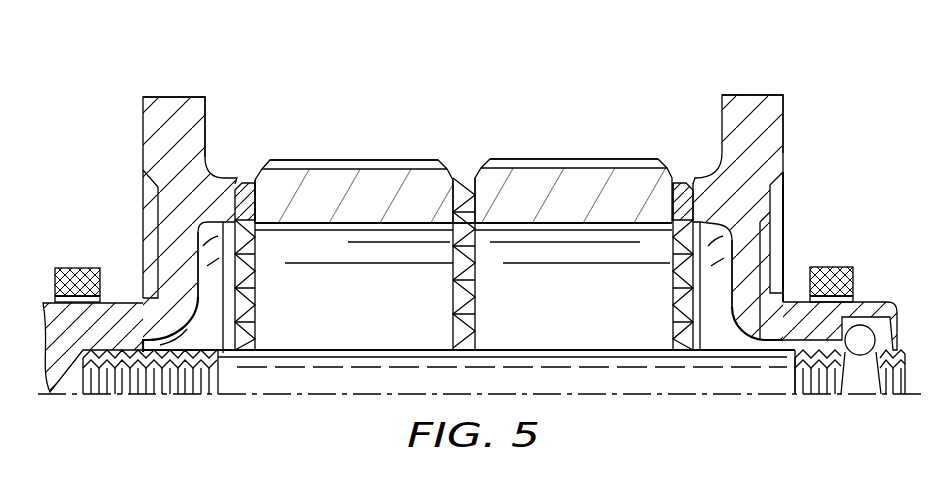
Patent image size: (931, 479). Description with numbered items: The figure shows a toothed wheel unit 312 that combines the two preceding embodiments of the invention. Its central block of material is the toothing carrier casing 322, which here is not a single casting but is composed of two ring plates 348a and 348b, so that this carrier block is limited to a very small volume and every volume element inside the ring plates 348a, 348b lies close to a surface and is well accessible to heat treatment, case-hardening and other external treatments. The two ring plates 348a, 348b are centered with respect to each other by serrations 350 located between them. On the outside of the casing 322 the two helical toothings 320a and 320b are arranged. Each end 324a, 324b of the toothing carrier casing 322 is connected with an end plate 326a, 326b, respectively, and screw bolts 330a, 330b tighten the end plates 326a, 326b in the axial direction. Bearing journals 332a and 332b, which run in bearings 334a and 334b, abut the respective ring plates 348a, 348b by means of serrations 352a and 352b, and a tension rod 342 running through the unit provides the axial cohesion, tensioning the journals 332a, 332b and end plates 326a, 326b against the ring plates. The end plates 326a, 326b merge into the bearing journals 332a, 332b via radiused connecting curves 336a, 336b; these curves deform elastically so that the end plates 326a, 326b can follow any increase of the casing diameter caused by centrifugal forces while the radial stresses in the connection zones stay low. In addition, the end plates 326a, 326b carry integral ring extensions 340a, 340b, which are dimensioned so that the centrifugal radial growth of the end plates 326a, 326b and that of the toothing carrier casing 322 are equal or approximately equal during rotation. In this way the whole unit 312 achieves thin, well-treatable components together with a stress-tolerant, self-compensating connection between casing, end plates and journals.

The toothed wheel unit 312 is at (405, 83).
The helical toothing 320a is at (307, 159).
The helical toothing 320b is at (597, 156).
The toothing carrier casing 322 is at (412, 177).
The end of toothing carrier casing 324a is at (260, 201).
The end of toothing carrier casing 324b is at (662, 215).
The end plate 326a is at (150, 131).
The end plate 326b is at (780, 118).
The screw bolt 330a is at (187, 175).
The screw bolt 330b is at (767, 197).
The bearing journal 332a is at (68, 387).
The bearing journal 332b is at (823, 311).
The bearing 334a is at (78, 268).
The bearing 334b is at (835, 266).
The radiused connecting curve 336a is at (172, 302).
The radiused connecting curve 336b is at (763, 325).
The integral ring extension 340a is at (177, 103).
The integral ring extension 340b is at (757, 96).
The tension rod 342 is at (633, 385).
The ring plate 348a is at (347, 177).
The ring plate 348b is at (518, 177).
The serrations 350 is at (467, 314).
The serrations 352a is at (247, 189).
The serrations 352b is at (685, 188).